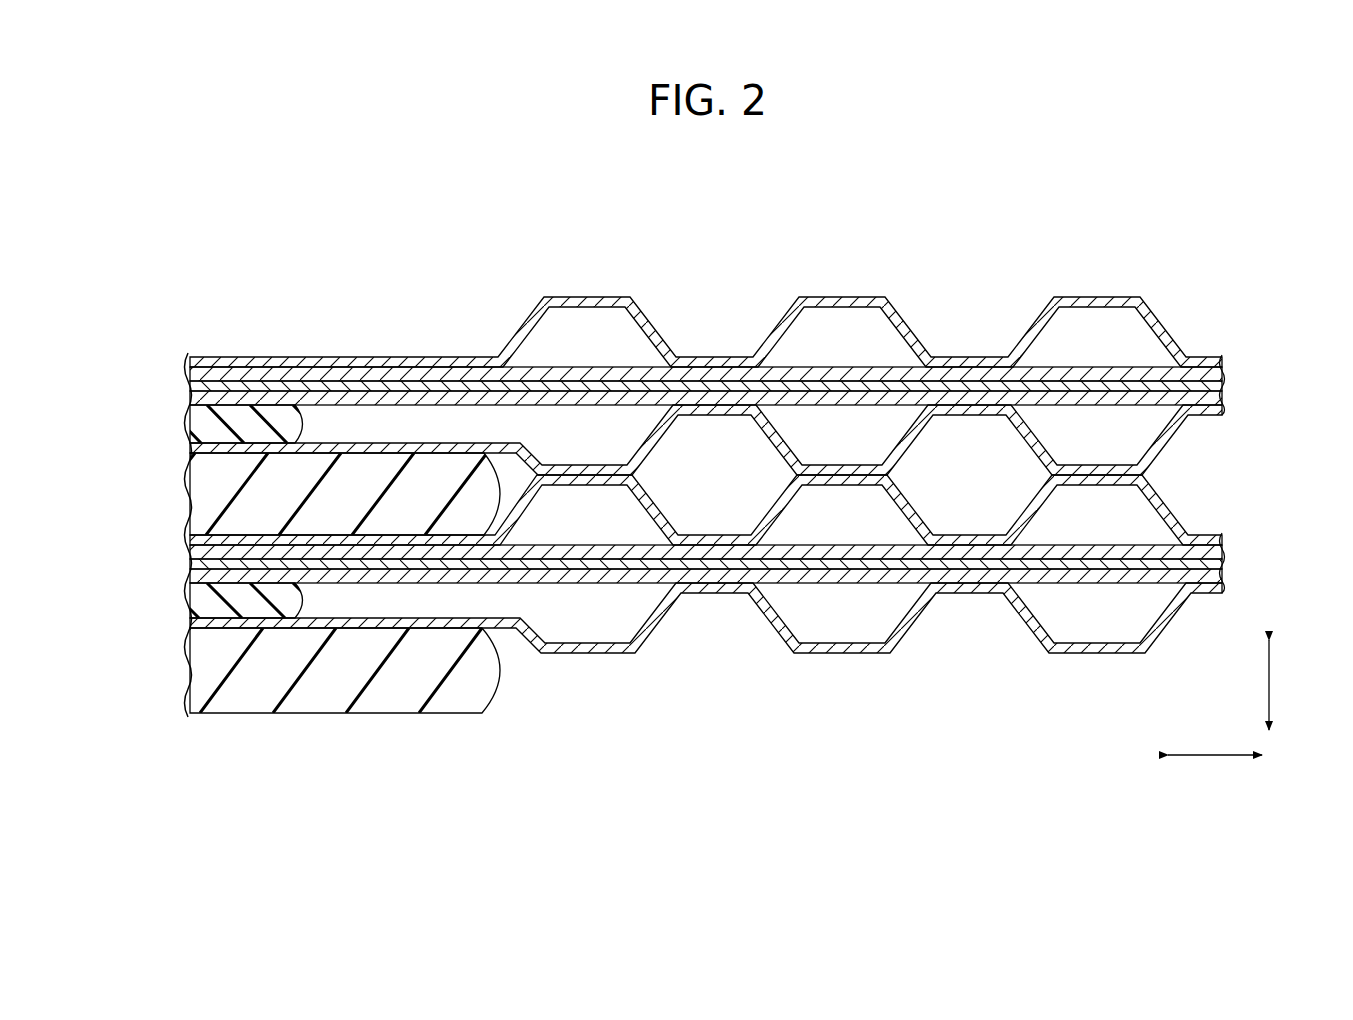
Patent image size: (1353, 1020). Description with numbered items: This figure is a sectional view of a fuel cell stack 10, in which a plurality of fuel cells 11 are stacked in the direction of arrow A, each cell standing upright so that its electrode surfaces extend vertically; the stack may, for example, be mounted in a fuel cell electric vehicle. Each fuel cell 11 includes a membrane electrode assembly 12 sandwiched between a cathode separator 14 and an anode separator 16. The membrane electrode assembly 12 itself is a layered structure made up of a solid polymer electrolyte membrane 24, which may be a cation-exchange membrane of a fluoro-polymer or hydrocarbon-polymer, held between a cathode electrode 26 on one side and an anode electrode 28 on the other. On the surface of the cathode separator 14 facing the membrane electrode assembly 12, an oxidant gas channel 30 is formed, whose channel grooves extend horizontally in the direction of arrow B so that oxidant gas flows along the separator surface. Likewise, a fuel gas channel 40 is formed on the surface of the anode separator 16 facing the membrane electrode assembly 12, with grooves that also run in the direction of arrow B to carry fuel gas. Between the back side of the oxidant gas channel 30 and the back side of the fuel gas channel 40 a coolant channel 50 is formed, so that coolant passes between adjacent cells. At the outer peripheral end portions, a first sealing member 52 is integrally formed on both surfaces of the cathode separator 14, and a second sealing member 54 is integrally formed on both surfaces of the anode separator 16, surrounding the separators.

The fuel cell stack 10 is at (769, 155).
The fuel cell 11 is at (842, 216).
The membrane electrode assembly 12 is at (900, 272).
The cathode separator 14 is at (842, 294).
The anode separator 16 is at (1052, 451).
The solid polymer electrolyte membrane 24 is at (962, 386).
The cathode electrode 26 is at (893, 372).
The anode electrode 28 is at (992, 400).
The oxidant gas channel 30 is at (818, 306).
The fuel gas channel 40 is at (793, 420).
The coolant channel 50 is at (720, 432).
The first sealing member 52 is at (210, 491).
The second sealing member 54 is at (210, 597).